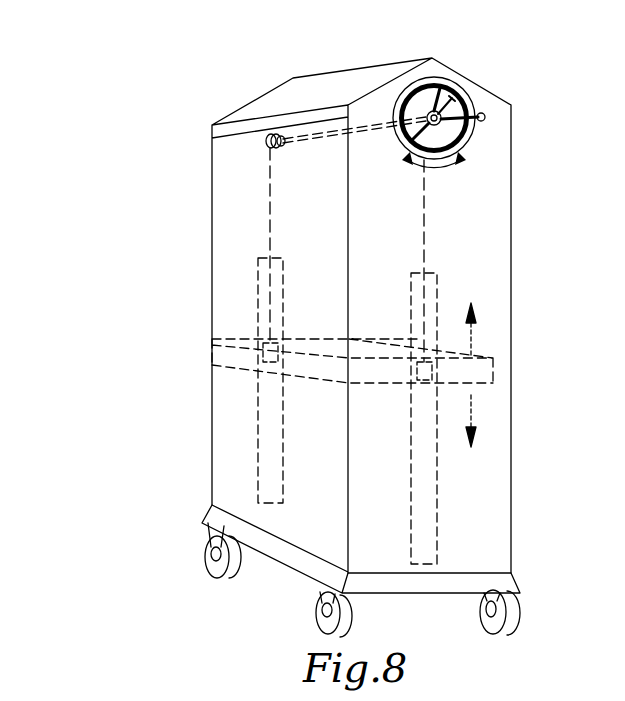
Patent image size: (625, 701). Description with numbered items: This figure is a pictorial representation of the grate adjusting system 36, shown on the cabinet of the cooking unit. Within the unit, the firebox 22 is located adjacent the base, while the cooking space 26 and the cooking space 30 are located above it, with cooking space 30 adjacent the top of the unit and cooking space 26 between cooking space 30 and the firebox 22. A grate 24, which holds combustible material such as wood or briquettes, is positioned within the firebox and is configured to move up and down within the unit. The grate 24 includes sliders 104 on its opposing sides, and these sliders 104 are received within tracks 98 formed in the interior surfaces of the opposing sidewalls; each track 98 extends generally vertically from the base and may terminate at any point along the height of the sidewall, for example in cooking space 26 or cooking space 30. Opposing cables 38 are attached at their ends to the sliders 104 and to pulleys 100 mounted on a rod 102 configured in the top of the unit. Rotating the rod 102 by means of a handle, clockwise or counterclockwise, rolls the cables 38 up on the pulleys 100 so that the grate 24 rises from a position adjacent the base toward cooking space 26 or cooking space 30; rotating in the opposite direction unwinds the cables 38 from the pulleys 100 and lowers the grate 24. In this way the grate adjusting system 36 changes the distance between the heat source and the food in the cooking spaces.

The firebox 22 is at (232, 415).
The grate 24 is at (487, 388).
The cooking space 26 is at (232, 315).
The cooking space 30 is at (232, 215).
The grate adjusting system 36 is at (452, 72).
The cable 38 is at (270, 178).
The track 98 is at (270, 462).
The pulley 100 is at (272, 135).
The rod 102 is at (362, 128).
The slider 104 is at (265, 353).